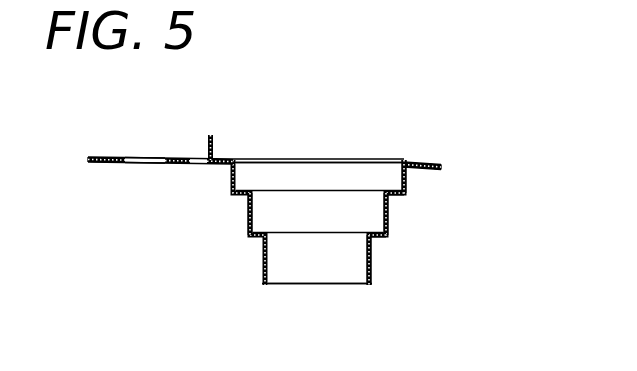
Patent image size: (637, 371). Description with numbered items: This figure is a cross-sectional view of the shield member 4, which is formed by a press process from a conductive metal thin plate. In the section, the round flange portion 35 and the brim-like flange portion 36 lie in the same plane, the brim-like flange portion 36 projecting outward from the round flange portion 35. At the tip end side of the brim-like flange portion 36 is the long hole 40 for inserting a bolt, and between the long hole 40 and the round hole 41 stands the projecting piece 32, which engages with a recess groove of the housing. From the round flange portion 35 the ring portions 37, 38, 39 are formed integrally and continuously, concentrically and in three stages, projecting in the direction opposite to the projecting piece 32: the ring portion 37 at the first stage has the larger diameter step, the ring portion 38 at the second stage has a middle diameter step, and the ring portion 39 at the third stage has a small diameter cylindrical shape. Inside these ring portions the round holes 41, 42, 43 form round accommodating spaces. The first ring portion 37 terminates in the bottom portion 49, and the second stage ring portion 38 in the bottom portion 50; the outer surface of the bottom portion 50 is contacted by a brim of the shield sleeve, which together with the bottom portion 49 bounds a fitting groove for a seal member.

The shield member 4 is at (442, 151).
The projecting piece 32 is at (210, 134).
The round flange portion 35 is at (423, 160).
The brim-like flange portion 36 is at (96, 157).
The ring portion 37 is at (405, 186).
The ring portion 38 is at (390, 222).
The ring portion 39 is at (372, 268).
The long hole 40 is at (142, 157).
The round hole 41 is at (271, 177).
The round hole 42 is at (267, 212).
The round hole 43 is at (304, 268).
The bottom portion 49 is at (393, 204).
The bottom portion 50 is at (383, 243).